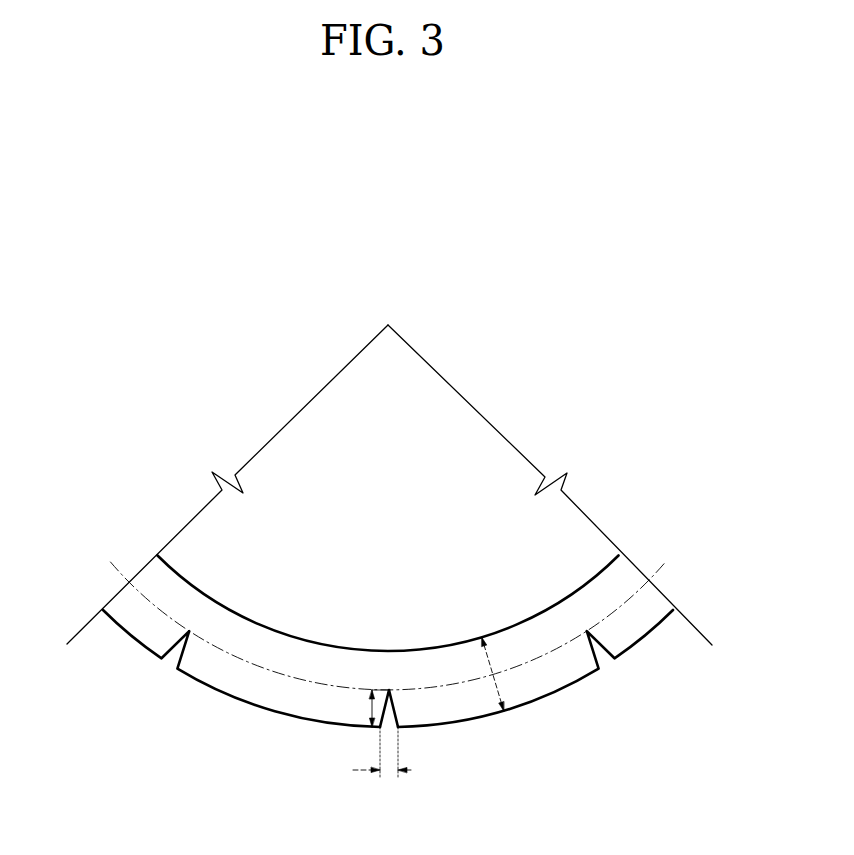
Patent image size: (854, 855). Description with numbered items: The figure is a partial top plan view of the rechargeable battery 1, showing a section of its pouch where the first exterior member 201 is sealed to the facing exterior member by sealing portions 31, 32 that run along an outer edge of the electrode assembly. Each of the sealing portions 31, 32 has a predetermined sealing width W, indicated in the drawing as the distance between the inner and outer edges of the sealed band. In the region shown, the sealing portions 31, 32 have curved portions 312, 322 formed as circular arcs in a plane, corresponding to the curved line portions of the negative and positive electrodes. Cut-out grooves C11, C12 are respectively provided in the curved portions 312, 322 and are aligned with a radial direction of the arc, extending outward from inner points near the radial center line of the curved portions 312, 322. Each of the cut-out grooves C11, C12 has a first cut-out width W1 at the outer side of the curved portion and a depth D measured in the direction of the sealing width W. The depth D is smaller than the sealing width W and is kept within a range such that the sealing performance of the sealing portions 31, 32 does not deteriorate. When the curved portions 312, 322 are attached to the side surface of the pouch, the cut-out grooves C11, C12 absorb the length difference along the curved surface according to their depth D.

The rechargeable battery 1 is at (339, 283).
The first exterior member 201 is at (450, 422).
The sealing portion 31 is at (414, 640).
The sealing portion 32 is at (414, 640).
The curved portion 312 is at (388, 682).
The curved portion 322 is at (547, 680).
The cut-out groove C11 is at (449, 740).
The cut-out groove C12 is at (393, 715).
The depth of the cut-out grooves D is at (371, 708).
The sealing width W is at (486, 674).
The first cut-out width W1 is at (382, 767).